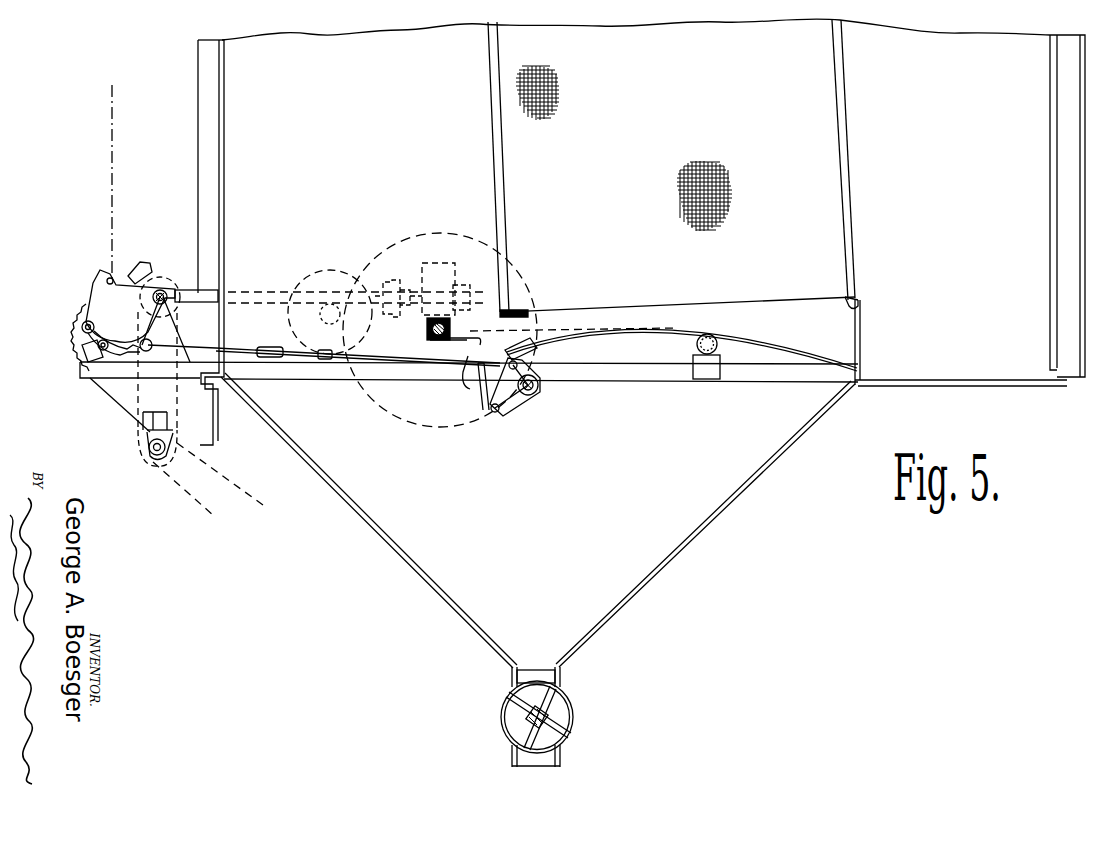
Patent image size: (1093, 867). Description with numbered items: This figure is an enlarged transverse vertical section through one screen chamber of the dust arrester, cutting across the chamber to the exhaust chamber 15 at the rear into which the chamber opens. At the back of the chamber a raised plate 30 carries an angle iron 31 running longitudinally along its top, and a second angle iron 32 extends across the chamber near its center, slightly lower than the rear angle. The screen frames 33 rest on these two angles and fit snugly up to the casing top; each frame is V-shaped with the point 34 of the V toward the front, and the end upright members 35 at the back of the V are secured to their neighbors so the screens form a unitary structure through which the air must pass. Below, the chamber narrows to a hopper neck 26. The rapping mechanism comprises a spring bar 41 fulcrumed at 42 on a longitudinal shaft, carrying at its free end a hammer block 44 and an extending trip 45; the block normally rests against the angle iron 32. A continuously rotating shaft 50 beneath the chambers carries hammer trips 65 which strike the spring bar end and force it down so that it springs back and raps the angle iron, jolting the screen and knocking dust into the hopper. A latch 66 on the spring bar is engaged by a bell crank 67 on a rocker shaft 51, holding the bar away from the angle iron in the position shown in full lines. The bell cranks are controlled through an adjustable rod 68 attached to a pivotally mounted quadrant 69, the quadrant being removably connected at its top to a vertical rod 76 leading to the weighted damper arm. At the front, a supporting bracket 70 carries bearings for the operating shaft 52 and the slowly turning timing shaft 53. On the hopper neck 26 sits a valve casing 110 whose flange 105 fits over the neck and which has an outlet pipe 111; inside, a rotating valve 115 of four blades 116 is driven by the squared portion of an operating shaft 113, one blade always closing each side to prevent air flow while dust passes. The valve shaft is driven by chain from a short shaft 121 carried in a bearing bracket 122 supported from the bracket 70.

The exhaust chamber 15 is at (998, 46).
The hopper neck 26 is at (548, 667).
The end wall 30 is at (860, 325).
The angle iron 31 is at (846, 306).
The second angle iron 32 is at (497, 310).
The screen frame 33 is at (810, 94).
The point of the V 34 is at (495, 117).
The end upright member 35 is at (845, 156).
The spring bar 41 is at (678, 333).
The fulcrum 42 is at (714, 337).
The hammer block 44 is at (525, 340).
The trip 45 is at (464, 368).
The continuously rotating shaft 50 is at (440, 318).
The rocker shaft 51 is at (538, 392).
The operating shaft 52 is at (163, 290).
The timing shaft 53 is at (86, 325).
The hammer trip 65 is at (468, 343).
The latch 66 is at (482, 410).
The bell crank 67 is at (524, 400).
The adjustable rod 68 is at (320, 340).
The quadrant 69 is at (110, 300).
The supporting bracket 70 is at (117, 404).
The rod 76 is at (116, 168).
The flange 105 is at (512, 671).
The valve casing 110 is at (501, 727).
The outlet pipe 111 is at (513, 773).
The operating shaft 113 is at (560, 713).
The rotating valve 115 is at (561, 704).
The blade 116 is at (504, 712).
The short shaft 121 is at (152, 456).
The bearing bracket 122 is at (150, 437).